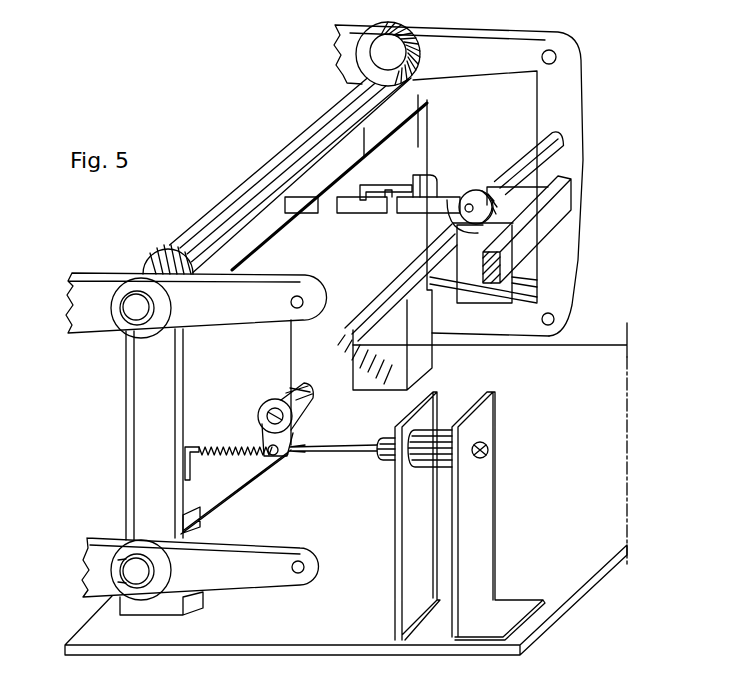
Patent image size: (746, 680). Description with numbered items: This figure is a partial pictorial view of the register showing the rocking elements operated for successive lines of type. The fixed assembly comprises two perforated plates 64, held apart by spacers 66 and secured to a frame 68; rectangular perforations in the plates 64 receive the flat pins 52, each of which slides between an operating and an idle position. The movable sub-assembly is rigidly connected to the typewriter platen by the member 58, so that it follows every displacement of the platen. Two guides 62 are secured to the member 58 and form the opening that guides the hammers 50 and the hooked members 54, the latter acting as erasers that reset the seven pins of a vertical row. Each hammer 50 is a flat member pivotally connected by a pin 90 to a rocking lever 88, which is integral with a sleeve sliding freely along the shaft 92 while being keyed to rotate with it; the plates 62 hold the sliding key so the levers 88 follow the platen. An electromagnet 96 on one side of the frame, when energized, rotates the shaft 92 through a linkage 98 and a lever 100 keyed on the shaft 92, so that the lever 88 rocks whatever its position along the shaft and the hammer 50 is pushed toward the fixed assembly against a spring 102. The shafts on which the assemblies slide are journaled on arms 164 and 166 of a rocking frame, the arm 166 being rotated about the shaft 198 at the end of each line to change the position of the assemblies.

The hammer 50 is at (403, 212).
The flat pin 52 is at (342, 207).
The hooked member 54 is at (370, 187).
The member 58 is at (563, 230).
The guide 62 is at (519, 205).
The perforated plate 64 is at (430, 143).
The spacer 66 is at (164, 432).
The frame 68 is at (274, 636).
The rocking lever 88 is at (468, 203).
The pin 90 is at (447, 227).
The shaft 92 is at (517, 167).
The electromagnet 96 is at (433, 467).
The linkage 98 is at (347, 453).
The lever 100 is at (267, 443).
The spring 102 is at (228, 460).
The arm 164 is at (261, 314).
The arm 166 is at (249, 571).
The shaft 198 is at (128, 577).